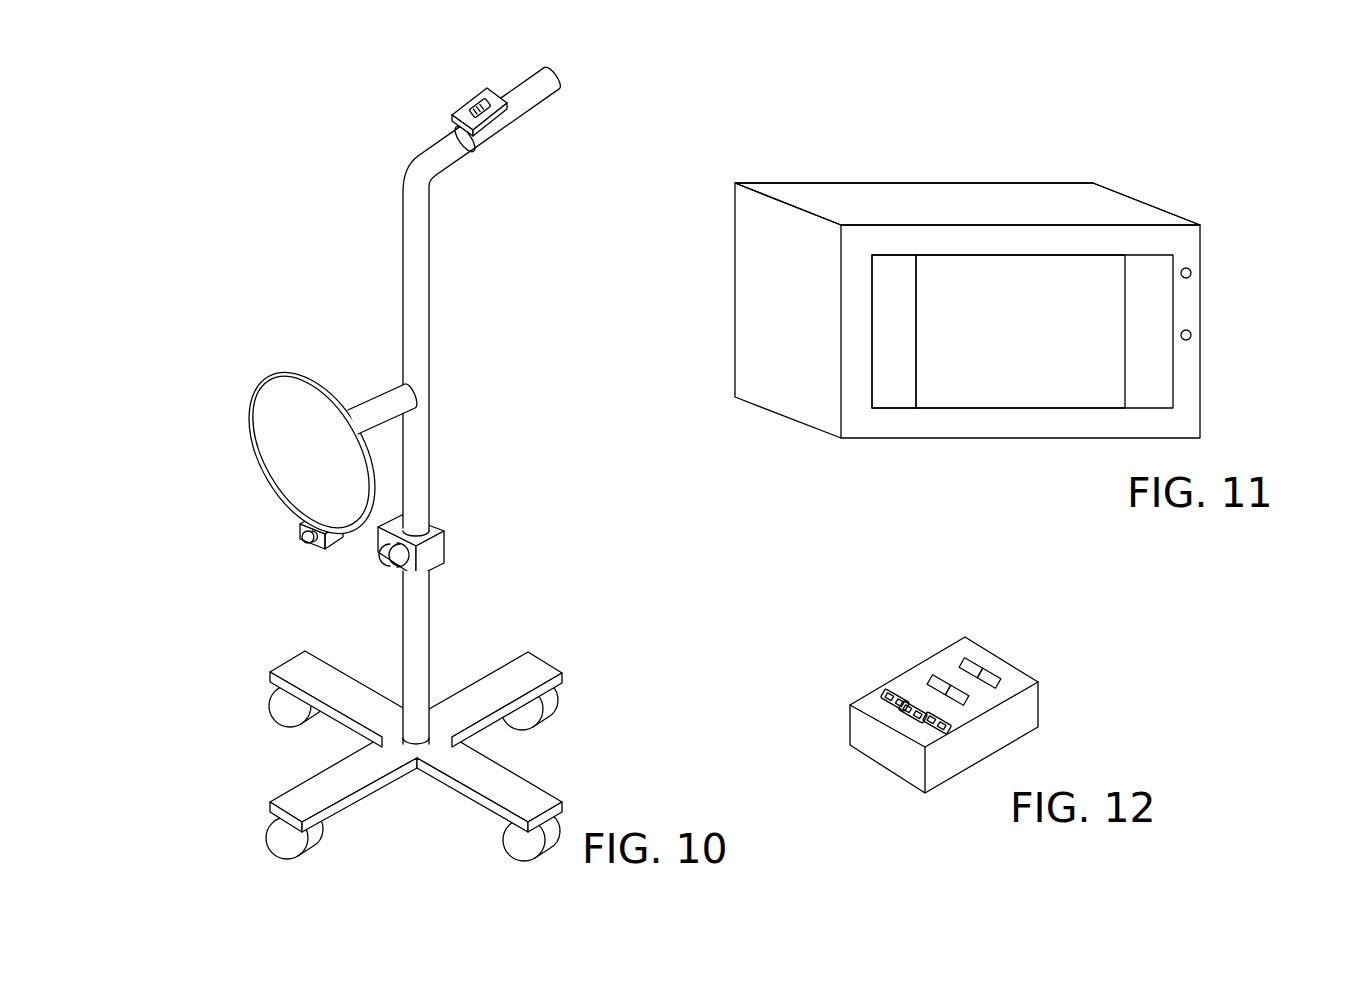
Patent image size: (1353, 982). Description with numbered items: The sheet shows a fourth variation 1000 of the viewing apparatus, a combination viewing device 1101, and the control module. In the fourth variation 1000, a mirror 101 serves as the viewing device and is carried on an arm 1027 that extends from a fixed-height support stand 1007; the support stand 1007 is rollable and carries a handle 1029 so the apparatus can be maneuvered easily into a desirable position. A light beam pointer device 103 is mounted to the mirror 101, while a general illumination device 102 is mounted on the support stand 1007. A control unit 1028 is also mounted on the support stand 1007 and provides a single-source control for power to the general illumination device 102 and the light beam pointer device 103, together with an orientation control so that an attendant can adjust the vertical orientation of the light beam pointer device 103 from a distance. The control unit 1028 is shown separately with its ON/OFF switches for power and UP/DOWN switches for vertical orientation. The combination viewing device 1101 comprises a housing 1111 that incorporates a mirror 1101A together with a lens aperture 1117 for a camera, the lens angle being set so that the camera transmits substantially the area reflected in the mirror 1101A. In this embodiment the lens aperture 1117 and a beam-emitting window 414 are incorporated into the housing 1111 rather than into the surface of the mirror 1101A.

In FIG. 10, the fourth variation of the viewing apparatus 1000 is at (270, 188).
In FIG. 10, the fixed-height support stand 1007 is at (417, 283).
In FIG. 10, the handle 1029 is at (540, 87).
In FIG. 10, the control unit 1028 is at (495, 118).
In FIG. 12, the control unit 1028 is at (1010, 673).
In FIG. 10, the arm 1027 is at (380, 405).
In FIG. 10, the mirror 101 is at (262, 384).
In FIG. 10, the light beam pointer device 103 is at (323, 550).
In FIG. 11, the light beam pointer device 103 is at (893, 322).
In FIG. 10, the general illumination device 102 is at (430, 553).
In FIG. 11, the combination viewing device 1101 is at (958, 153).
In FIG. 11, the housing 1111 is at (1075, 203).
In FIG. 11, the mirror 1101A is at (1077, 280).
In FIG. 11, the beam-emitting window 414 is at (1191, 272).
In FIG. 11, the lens aperture 1117 is at (1191, 333).